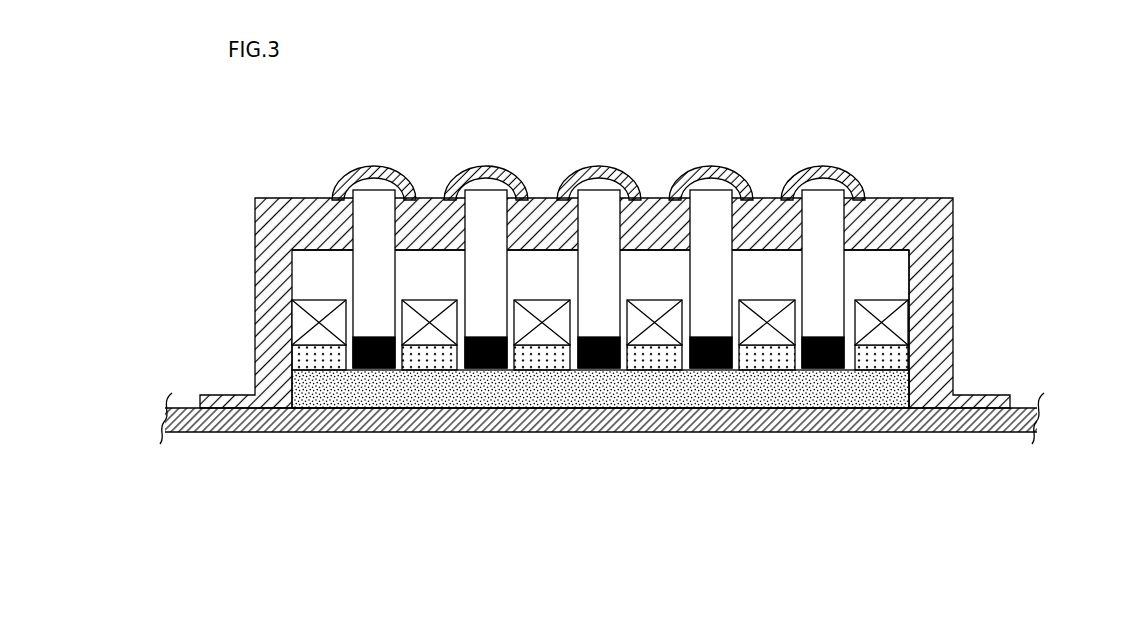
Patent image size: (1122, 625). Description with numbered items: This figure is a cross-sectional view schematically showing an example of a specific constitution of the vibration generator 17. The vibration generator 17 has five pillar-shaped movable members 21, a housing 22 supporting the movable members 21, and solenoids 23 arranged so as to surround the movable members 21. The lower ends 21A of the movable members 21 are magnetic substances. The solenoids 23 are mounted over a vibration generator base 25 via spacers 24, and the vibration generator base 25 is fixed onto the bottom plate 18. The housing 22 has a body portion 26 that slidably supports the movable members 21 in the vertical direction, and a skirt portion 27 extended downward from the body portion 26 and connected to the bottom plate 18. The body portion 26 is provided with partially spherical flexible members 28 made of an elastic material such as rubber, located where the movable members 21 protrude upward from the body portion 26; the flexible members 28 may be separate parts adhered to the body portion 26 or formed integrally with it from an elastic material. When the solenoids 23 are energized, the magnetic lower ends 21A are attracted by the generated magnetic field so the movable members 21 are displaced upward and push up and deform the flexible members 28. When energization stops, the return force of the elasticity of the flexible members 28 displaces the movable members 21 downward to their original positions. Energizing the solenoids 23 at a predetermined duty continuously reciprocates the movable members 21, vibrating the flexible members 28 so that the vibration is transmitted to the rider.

The vibration generator 17 is at (606, 313).
The bottom plate 18 is at (200, 433).
The movable member 21 is at (368, 205).
The lower end 21A is at (363, 365).
The housing 22 is at (956, 242).
The solenoid 23 is at (312, 338).
The spacer 24 is at (337, 358).
The vibration generator base 25 is at (900, 385).
The body portion 26 is at (905, 207).
The skirt portion 27 is at (935, 313).
The flexible member 28 is at (378, 168).